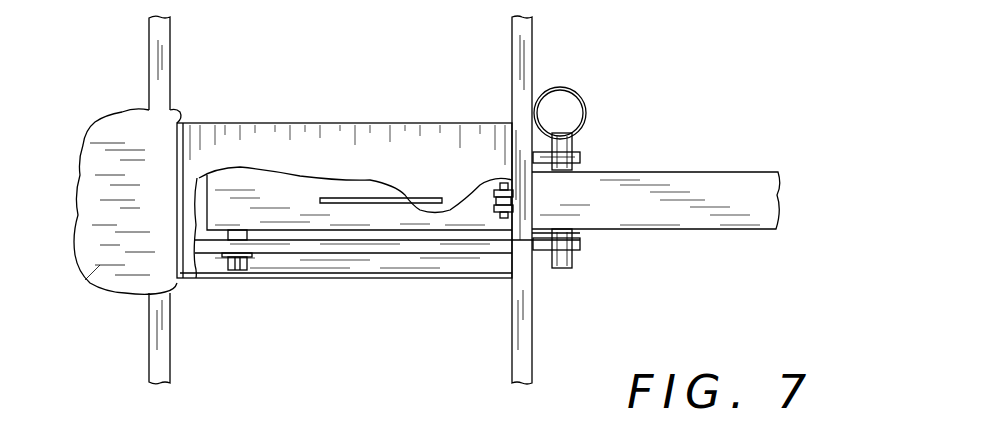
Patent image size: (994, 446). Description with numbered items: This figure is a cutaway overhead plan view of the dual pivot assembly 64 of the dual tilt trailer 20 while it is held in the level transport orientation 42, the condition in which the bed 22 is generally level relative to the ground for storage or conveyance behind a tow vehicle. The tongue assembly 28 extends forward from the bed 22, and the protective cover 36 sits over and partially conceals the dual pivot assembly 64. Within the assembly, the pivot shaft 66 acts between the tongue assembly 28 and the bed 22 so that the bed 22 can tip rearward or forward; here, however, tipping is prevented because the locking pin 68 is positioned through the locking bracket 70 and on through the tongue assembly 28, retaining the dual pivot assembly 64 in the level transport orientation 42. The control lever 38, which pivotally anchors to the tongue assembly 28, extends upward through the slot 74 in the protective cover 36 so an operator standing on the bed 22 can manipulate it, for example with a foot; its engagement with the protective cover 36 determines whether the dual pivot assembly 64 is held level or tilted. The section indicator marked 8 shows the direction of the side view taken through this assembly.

The dual tilt trailer 20 is at (725, 23).
The level transport orientation 42 is at (763, 63).
The protective cover 36 is at (348, 123).
The slot 74 is at (424, 158).
The locking bracket 70 is at (580, 155).
The tongue assembly 28 is at (742, 172).
The section line 8- 8 is at (815, 208).
The locking pin 68 is at (572, 263).
The dual pivot assembly 64 is at (433, 235).
The control lever 38 is at (356, 206).
The pivot shaft 66 is at (247, 236).
The bed 22 is at (75, 312).